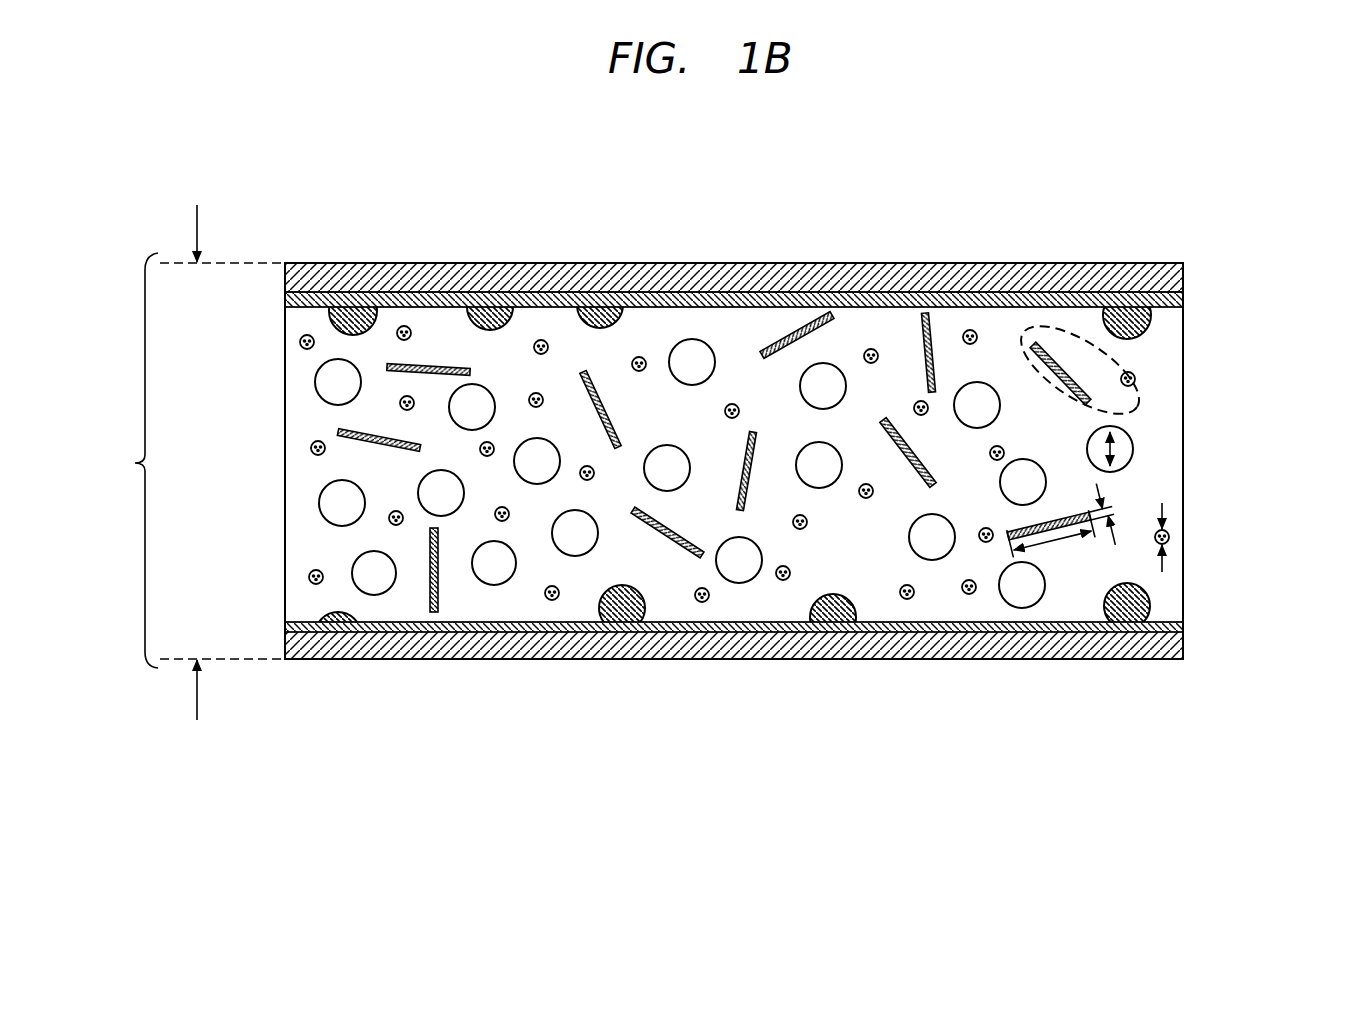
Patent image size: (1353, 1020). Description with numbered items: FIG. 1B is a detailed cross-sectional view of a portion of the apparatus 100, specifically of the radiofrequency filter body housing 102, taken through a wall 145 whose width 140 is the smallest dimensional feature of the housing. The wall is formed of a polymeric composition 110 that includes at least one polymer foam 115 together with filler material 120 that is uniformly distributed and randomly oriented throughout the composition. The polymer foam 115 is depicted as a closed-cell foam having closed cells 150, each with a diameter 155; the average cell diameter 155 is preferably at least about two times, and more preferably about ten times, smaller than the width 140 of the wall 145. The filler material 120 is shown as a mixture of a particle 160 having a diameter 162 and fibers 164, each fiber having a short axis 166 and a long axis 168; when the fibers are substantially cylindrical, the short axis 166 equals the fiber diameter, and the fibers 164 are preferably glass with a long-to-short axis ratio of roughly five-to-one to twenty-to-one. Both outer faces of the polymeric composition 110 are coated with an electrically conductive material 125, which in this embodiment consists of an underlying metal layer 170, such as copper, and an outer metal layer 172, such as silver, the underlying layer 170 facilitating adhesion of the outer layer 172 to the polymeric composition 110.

The apparatus 100 is at (1222, 120).
The radiofrequency filter body housing 102 is at (1050, 185).
The polymeric composition 110 is at (283, 308).
The polymer foam 115 is at (1162, 593).
The filler material 120 is at (1138, 369).
The electrically conductive material 125 is at (283, 264).
The width 140 is at (205, 228).
The wall 145 is at (189, 486).
The closed cells 150 is at (1132, 441).
The diameter 155 is at (1113, 453).
The particle 160 is at (1137, 380).
The diameter 162 is at (1164, 504).
The fibers 164 is at (1077, 386).
The short axis 166 is at (1097, 486).
The long axis 168 is at (1052, 552).
The underlying metal layer 170 is at (822, 302).
The outer metal layer 172 is at (702, 270).